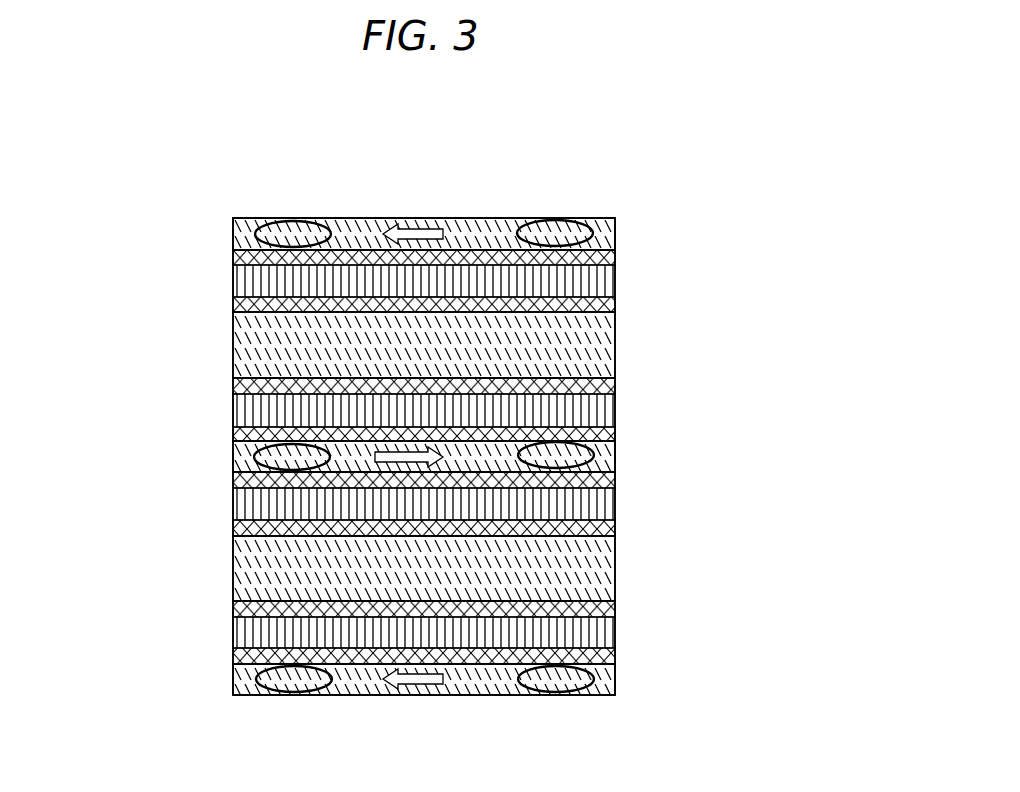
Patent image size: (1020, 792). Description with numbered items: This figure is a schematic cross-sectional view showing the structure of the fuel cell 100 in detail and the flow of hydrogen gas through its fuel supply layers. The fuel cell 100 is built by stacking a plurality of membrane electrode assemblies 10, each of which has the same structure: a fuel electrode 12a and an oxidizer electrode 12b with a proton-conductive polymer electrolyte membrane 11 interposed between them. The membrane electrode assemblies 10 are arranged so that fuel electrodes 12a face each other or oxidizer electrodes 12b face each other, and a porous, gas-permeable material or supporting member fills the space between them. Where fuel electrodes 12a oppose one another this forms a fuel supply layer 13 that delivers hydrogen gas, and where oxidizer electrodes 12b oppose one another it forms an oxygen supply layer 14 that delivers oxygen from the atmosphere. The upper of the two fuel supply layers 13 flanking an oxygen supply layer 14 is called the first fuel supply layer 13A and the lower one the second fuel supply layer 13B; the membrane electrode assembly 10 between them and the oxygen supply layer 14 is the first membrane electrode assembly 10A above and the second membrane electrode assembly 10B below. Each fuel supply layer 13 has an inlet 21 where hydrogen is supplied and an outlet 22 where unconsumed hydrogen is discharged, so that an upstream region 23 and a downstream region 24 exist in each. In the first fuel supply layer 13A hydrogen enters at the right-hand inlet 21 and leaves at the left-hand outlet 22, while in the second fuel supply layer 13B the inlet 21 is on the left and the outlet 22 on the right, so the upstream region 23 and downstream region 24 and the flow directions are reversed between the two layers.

The fuel cell 100 is at (552, 138).
The membrane electrode assembly 10 is at (216, 473).
The first membrane electrode assembly 10A is at (216, 253).
The second membrane electrode assembly 10B is at (216, 440).
The polymer electrolyte membrane 11 is at (615, 280).
The fuel electrode 12a is at (615, 258).
The oxidizer electrode 12b is at (617, 313).
The fuel supply layer 13 is at (233, 685).
The first fuel supply layer 13A is at (240, 237).
The second fuel supply layer 13B is at (233, 462).
The oxygen supply layer 14 is at (233, 345).
The inlet 21 is at (615, 232).
The outlet 22 is at (233, 222).
The upstream region 23 is at (572, 220).
The downstream region 24 is at (272, 218).